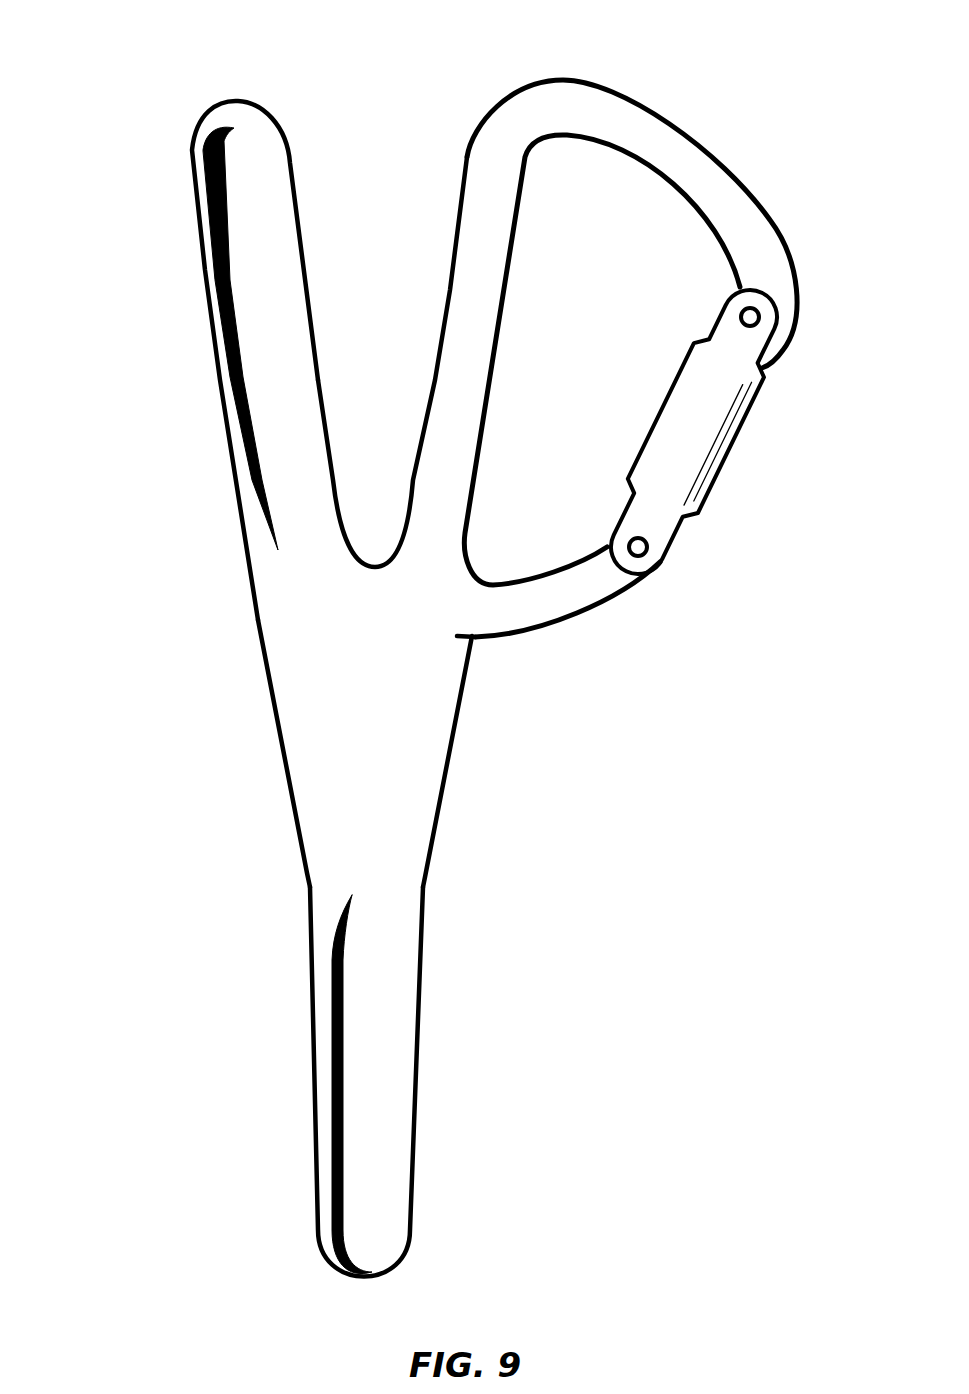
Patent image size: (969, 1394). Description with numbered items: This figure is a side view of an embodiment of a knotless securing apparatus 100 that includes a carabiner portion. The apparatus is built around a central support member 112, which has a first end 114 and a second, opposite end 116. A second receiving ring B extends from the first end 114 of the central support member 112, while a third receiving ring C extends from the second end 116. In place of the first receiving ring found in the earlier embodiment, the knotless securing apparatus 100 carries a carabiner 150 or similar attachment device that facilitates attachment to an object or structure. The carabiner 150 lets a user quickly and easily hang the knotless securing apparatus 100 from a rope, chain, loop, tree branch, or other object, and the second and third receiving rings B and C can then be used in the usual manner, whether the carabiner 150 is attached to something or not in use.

The knotless securing apparatus 100 is at (467, 640).
The central support member 112 is at (380, 740).
The first end 114 is at (346, 573).
The second end 116 is at (370, 857).
The carabiner 150 is at (769, 157).